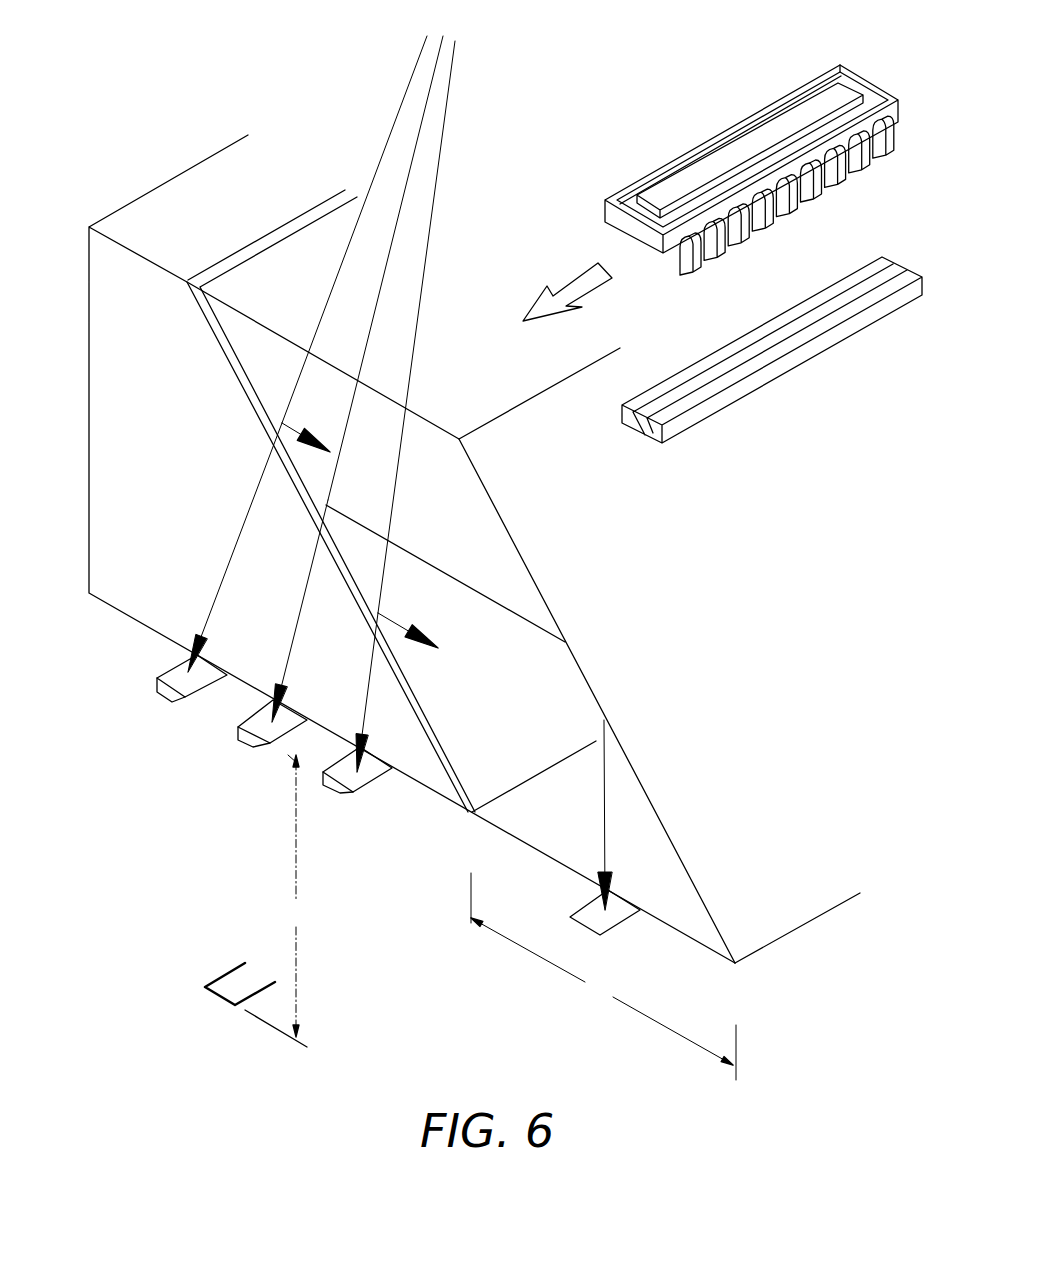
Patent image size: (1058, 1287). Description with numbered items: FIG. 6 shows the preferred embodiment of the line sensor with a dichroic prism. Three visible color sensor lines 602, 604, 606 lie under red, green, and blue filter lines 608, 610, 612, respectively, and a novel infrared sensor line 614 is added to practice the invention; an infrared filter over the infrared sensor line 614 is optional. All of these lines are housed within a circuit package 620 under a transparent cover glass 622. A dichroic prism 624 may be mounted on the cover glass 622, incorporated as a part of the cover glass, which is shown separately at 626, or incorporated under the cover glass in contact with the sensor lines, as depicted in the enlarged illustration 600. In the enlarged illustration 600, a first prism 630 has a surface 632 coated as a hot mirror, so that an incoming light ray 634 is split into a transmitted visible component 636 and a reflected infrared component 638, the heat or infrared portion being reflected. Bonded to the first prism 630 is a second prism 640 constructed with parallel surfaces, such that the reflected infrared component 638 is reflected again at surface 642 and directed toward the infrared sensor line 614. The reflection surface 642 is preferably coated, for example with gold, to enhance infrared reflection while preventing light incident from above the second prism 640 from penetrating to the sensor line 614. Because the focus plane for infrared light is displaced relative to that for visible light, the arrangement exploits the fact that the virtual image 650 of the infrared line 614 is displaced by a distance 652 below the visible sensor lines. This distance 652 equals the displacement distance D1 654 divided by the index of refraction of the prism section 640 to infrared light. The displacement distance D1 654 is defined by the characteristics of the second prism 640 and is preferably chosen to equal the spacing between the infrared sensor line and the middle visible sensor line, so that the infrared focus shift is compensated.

The enlarged illustration 600 is at (150, 163).
The visible color sensor line 602 is at (157, 696).
The visible color sensor line 604 is at (237, 743).
The visible color sensor line 606 is at (327, 794).
The red filter line 608 is at (160, 677).
The green filter line 610 is at (260, 723).
The blue filter line 612 is at (363, 780).
The infrared sensor line 614 is at (610, 918).
The circuit package 620 is at (625, 192).
The transparent cover glass 622 is at (792, 148).
The dichroic prism 624 is at (787, 117).
The cover glass with incorporated dichroic prism 626 is at (652, 432).
The first prism 630 is at (143, 567).
The coated surface 632 is at (250, 342).
The light ray 634 is at (368, 340).
The transmitted visible component 636 is at (290, 627).
The reflected infrared component 638 is at (436, 566).
The second prism 640 is at (825, 913).
The reflection surface 642 is at (628, 755).
The virtual image 650 is at (232, 987).
The displacement distance 652 is at (297, 960).
The displacement distance D1 654 is at (510, 940).